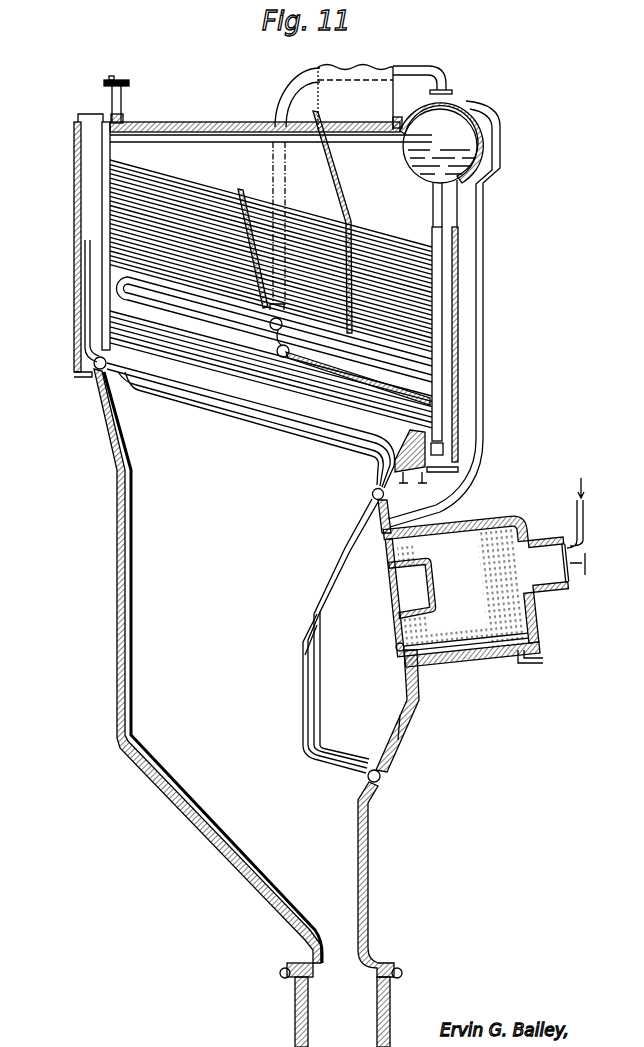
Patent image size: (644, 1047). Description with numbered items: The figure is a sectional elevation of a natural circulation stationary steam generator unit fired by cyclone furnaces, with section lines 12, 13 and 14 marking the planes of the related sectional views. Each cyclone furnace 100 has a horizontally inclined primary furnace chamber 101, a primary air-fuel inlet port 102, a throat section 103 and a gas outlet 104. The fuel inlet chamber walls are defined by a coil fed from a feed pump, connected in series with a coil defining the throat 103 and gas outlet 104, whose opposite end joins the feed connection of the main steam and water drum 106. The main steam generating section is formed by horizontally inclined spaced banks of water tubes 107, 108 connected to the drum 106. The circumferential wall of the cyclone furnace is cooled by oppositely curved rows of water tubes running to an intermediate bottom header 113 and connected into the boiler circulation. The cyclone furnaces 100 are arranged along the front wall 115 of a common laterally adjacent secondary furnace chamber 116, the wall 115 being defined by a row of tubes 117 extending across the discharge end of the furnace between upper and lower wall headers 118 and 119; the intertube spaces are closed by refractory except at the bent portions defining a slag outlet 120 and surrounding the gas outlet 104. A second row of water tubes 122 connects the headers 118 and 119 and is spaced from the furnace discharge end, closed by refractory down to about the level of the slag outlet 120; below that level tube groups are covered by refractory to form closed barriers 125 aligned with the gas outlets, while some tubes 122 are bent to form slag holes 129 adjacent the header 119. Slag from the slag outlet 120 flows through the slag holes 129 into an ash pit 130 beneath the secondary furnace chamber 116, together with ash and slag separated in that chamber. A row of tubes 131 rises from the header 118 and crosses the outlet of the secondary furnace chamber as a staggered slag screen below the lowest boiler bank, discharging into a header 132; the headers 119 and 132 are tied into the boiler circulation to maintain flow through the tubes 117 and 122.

The section line 12- 12 is at (484, 495).
The section line 13- 13 is at (393, 597).
The section line 14- 14 is at (377, 650).
The cyclone furnace 100 is at (533, 620).
The primary furnace chamber 101 is at (478, 612).
The primary air-fuel inlet port 102 is at (557, 575).
The throat section 103 is at (419, 555).
The gas outlet 104 is at (400, 585).
The main steam and water drum 106 is at (452, 148).
The bank of water tubes 107 is at (205, 367).
The bank of water tubes 108 is at (378, 270).
The intermediate bottom header 113 is at (538, 652).
The front wall 115 is at (403, 738).
The secondary furnace chamber 116 is at (218, 627).
The row of tubes 117 is at (417, 705).
The upper wall header 118 is at (373, 490).
The lower wall header 119 is at (382, 780).
The slag outlet 120 is at (396, 650).
The second row of water tubes 122 is at (337, 555).
The closed barrier 125 is at (323, 658).
The slag hole 129 is at (352, 767).
The ash pit 130 is at (353, 1009).
The row of tubes 131 is at (281, 406).
The header 132 is at (93, 372).